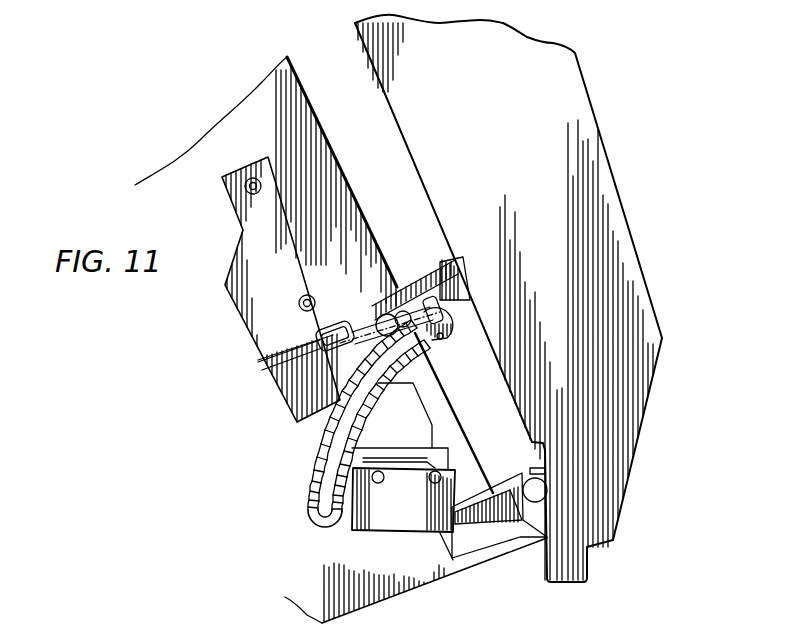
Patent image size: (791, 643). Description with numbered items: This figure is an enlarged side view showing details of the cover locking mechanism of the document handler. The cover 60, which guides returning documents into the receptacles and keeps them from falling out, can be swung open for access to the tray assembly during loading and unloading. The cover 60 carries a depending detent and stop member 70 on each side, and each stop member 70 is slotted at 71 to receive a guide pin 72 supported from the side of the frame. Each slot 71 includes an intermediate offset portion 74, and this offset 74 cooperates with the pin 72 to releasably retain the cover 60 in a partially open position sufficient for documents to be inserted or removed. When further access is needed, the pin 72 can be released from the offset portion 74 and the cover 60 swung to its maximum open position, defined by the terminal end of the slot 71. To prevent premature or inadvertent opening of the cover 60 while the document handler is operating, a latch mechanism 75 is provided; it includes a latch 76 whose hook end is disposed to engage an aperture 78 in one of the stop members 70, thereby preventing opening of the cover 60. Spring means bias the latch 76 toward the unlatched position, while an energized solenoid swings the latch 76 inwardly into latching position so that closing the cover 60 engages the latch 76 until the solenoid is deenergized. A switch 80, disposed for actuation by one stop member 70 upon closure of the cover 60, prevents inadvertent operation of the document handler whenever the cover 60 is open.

The cover 60 is at (588, 188).
The detent and stop member 70 is at (415, 278).
The slot 71 is at (304, 516).
The guide pin 72 is at (382, 304).
The intermediate offset portion 74 is at (330, 445).
The latch mechanism 75 is at (240, 350).
The latch 76 is at (438, 341).
The aperture 78 is at (430, 295).
The switch 80 is at (363, 522).